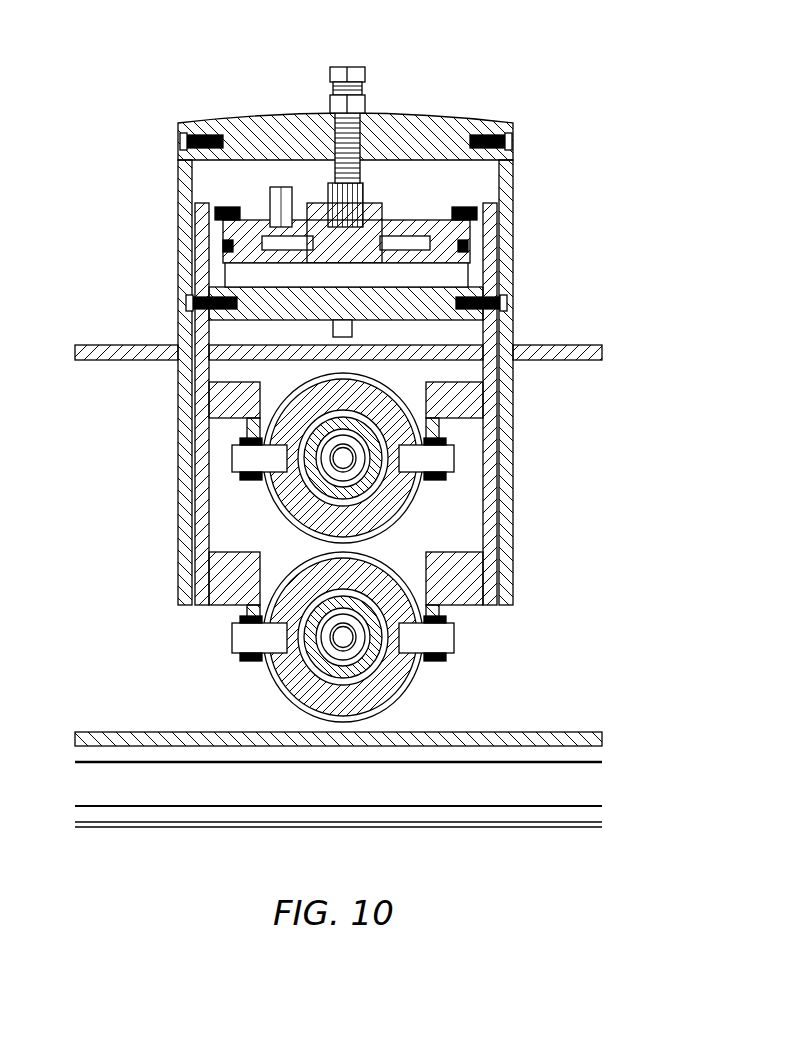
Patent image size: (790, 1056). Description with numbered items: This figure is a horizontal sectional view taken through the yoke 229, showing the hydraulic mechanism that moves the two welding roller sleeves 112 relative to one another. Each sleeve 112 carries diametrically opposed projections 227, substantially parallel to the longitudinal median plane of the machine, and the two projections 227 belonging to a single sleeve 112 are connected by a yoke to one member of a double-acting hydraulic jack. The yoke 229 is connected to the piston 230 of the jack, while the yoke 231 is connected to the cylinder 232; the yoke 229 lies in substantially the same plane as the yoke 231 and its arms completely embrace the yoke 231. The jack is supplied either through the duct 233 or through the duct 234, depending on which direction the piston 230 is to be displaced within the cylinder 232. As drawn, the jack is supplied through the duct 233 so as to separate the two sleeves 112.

The sleeve 112 is at (300, 563).
The projection 227 is at (240, 460).
The yoke 229 is at (187, 195).
The piston 230 is at (467, 235).
The yoke 231 is at (203, 262).
The cylinder 232 is at (483, 260).
The duct 233 is at (270, 197).
The duct 234 is at (355, 330).